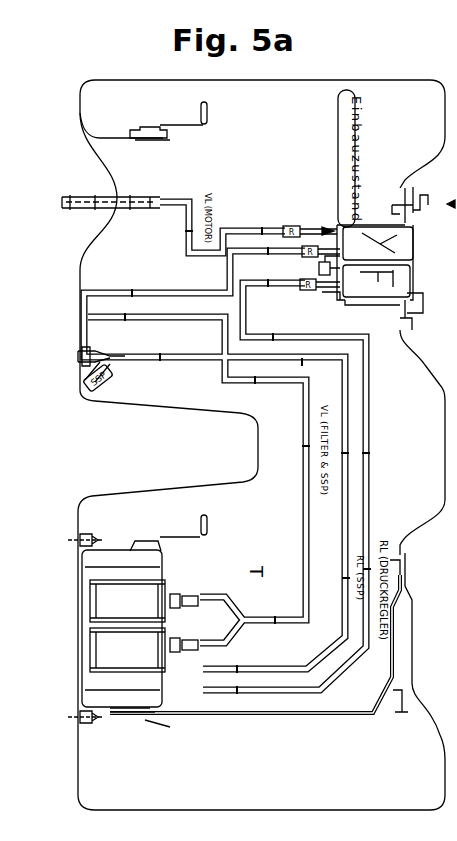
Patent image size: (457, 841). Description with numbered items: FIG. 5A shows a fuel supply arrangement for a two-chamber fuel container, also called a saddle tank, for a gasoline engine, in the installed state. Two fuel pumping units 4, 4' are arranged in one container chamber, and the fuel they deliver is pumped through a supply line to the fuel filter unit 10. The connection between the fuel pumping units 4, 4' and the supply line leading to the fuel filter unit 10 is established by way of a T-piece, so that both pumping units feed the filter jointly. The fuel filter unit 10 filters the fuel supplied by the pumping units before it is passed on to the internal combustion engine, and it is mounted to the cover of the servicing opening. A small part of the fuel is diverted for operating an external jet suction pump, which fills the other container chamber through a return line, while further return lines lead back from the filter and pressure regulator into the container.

The fuel filter unit 10 is at (345, 233).
The fuel pumping unit 4 is at (155, 588).
The additional fuel pumping unit 4' is at (151, 659).